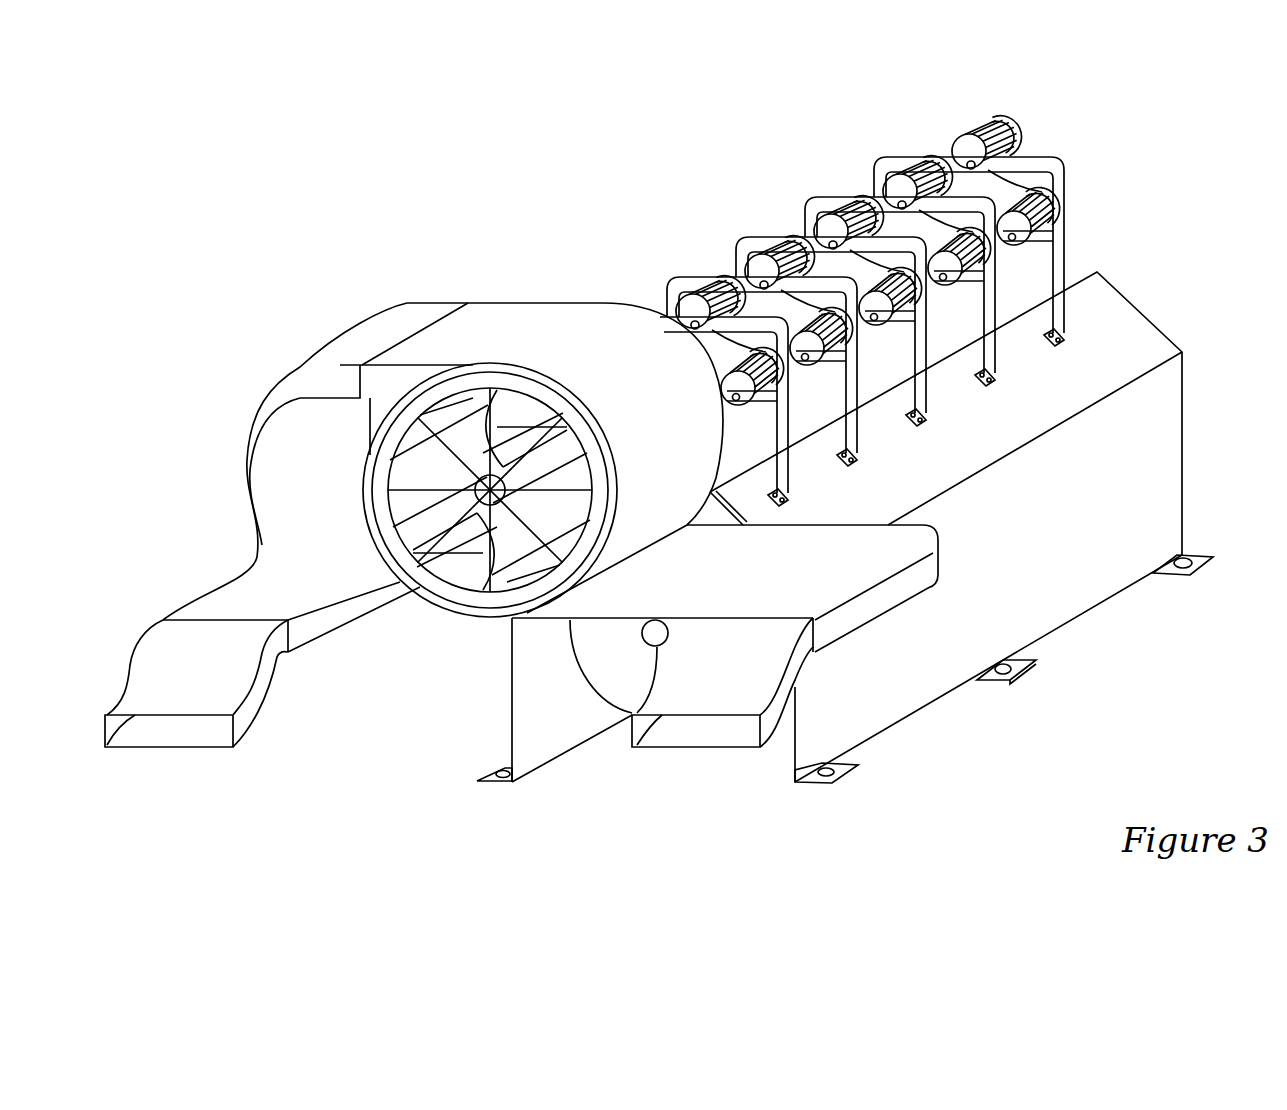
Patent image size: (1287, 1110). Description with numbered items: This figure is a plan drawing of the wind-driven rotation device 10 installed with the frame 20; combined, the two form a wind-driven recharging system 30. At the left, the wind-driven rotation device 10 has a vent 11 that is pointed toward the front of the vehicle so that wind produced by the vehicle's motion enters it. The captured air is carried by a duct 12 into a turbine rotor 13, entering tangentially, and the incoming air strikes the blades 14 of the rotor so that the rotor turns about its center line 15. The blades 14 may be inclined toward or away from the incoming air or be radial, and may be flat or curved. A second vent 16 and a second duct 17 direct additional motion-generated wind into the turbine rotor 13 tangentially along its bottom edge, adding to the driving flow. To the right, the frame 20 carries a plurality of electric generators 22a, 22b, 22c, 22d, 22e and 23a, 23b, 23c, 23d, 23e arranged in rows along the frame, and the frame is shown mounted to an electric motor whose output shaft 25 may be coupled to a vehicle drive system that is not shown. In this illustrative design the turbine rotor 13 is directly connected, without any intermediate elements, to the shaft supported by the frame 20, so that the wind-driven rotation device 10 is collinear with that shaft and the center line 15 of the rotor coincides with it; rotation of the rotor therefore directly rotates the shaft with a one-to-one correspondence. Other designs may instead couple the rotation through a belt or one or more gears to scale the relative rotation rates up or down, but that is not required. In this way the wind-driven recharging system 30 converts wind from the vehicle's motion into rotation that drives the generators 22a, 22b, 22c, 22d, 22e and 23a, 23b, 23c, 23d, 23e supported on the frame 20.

The wind-driven rotation device 10 is at (251, 320).
The vent 11 is at (178, 733).
The duct 12 is at (365, 338).
The turbine rotor 13 is at (478, 606).
The blades 14 is at (452, 567).
The center line 15 is at (493, 476).
The second vent 16 is at (704, 733).
The second duct 17 is at (832, 538).
The frame 20 is at (1117, 131).
The electric generator 22a is at (707, 287).
The electric generator 22b is at (776, 247).
The electric generator 22c is at (845, 207).
The electric generator 22d is at (914, 167).
The electric generator 22e is at (982, 127).
The electric generator 23a is at (763, 377).
The electric generator 23b is at (832, 337).
The electric generator 23c is at (901, 297).
The electric generator 23d is at (970, 257).
The electric generator 23e is at (1040, 217).
The output shaft 25 is at (652, 638).
The wind-driven recharging system 30 is at (452, 116).